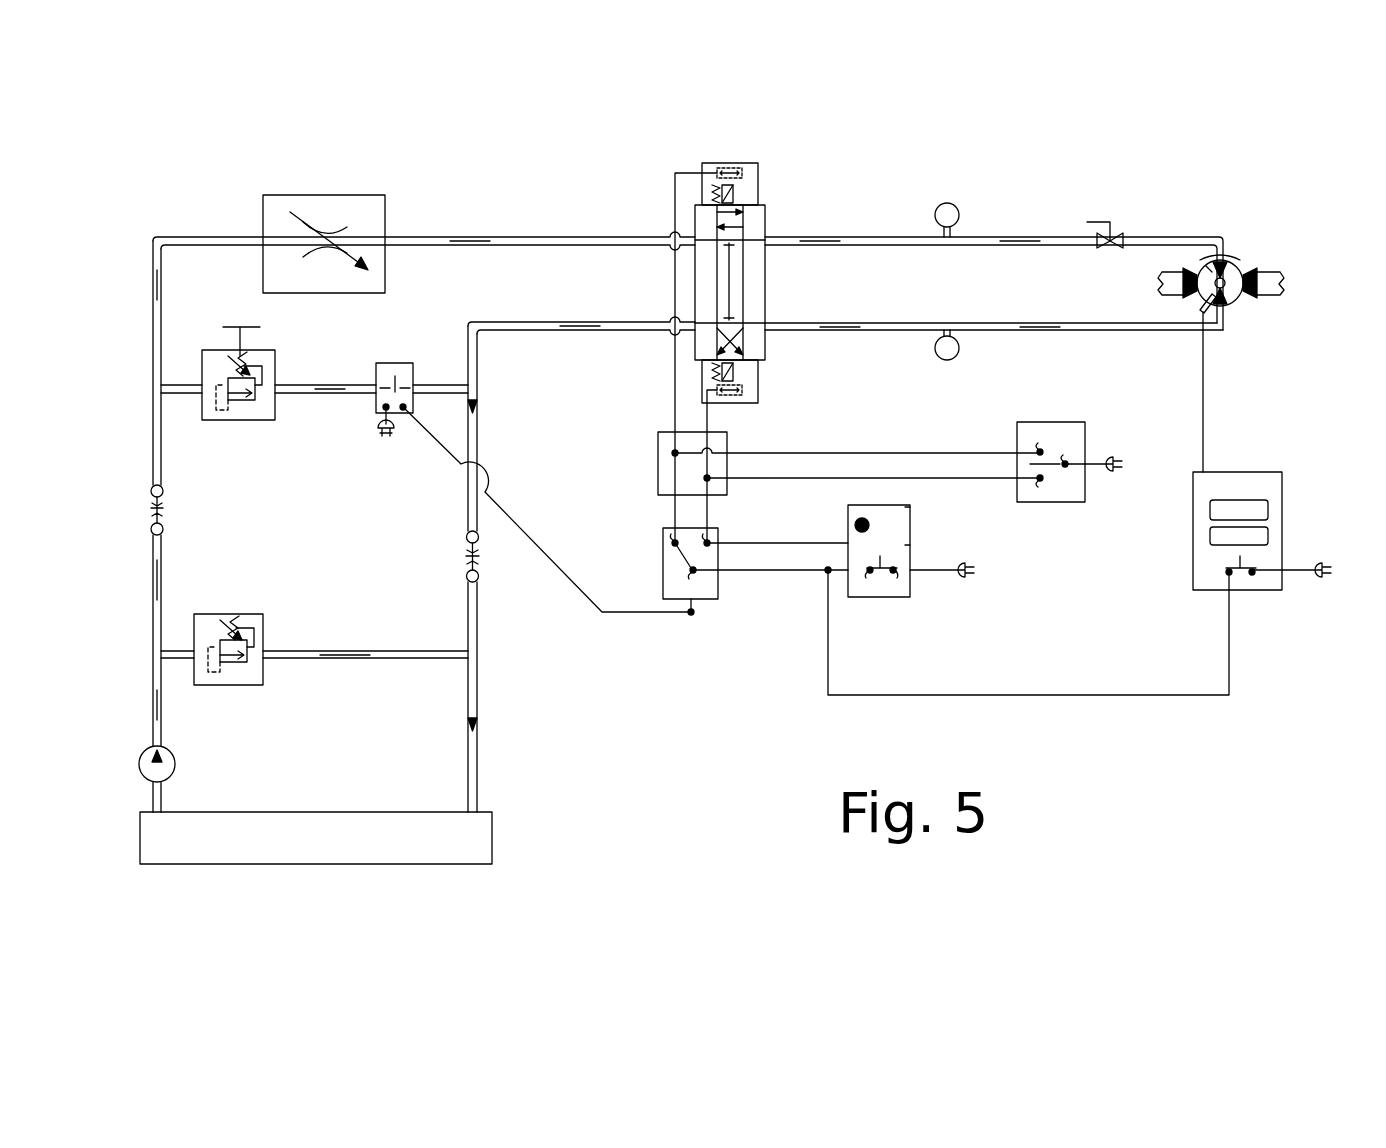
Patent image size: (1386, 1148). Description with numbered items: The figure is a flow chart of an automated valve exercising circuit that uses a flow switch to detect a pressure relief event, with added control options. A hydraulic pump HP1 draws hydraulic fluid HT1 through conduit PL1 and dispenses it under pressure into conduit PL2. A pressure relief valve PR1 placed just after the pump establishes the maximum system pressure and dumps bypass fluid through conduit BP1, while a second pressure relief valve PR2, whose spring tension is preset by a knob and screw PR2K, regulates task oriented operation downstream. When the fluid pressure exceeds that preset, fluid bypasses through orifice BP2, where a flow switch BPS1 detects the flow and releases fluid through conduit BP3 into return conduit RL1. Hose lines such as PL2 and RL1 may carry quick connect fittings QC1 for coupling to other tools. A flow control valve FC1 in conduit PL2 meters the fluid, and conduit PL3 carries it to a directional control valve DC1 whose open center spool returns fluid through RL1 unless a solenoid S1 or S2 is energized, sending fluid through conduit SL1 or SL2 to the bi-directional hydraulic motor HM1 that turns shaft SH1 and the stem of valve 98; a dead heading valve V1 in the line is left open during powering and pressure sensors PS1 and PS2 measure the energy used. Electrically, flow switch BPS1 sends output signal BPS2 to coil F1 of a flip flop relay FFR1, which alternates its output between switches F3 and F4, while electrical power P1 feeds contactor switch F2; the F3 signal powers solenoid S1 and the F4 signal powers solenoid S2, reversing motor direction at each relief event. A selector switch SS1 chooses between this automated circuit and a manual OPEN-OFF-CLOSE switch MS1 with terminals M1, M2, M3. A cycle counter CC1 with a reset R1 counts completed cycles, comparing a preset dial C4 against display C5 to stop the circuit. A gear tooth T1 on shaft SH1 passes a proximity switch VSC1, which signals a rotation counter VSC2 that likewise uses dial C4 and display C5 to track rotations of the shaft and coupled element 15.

The flow control valve FC1 is at (343, 195).
The conduit PL3 is at (572, 238).
The conduit PL2 is at (155, 403).
The conduit PL1 is at (152, 795).
The hydraulic pump HP1 is at (140, 767).
The hydraulic fluid HT1 is at (290, 865).
The quick connect fittings QC1 is at (148, 520).
The return conduit RL1 is at (617, 328).
The pressure relief valve PR2 is at (225, 420).
The pressure adjustment means PR2K is at (245, 326).
The pressure relief valve PR1 is at (208, 685).
The bypass orifice BP2 is at (338, 385).
The conduit BP3 is at (436, 385).
The conduit BP1 is at (385, 651).
The flow switch BPS1 is at (405, 350).
The output signal BPS2 is at (590, 562).
The electrical power P1 is at (379, 430).
The directional control valve DC1 is at (766, 272).
The solenoid S1 is at (757, 170).
The solenoid S2 is at (738, 403).
The conduit SL1 is at (795, 238).
The conduit SL2 is at (797, 331).
The pressure sensor PS1 is at (957, 214).
The pressure sensor PS2 is at (936, 352).
The dead heading valve V1 is at (1113, 232).
The hydraulic motor HM1 is at (1228, 310).
The shaft SH1 is at (1228, 262).
The drive shaft 15 is at (1266, 290).
The valve 98 is at (1243, 272).
The gear tooth T1 is at (1206, 266).
The proximity switch VSC1 is at (1200, 305).
The selector switch SS1 is at (658, 435).
The manual switch MS1 is at (1040, 422).
The mode switch terminal M1 is at (1073, 458).
The mode switch terminal M2 is at (1048, 485).
The mode switch terminal M3 is at (1048, 447).
The flip flop relay FFR1 is at (718, 592).
The coil F1 is at (693, 614).
The contactor switch F2 is at (688, 579).
The switch F3 is at (673, 548).
The switch F4 is at (706, 548).
The cycle counter CC1 is at (910, 597).
The reset R1 is at (856, 525).
The dial C4 is at (910, 507).
The display C5 is at (910, 545).
The counter VSC2 is at (1260, 472).